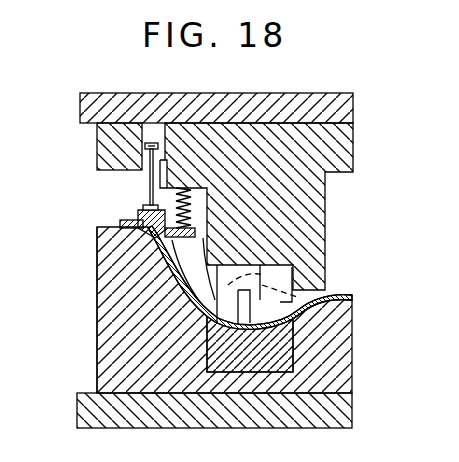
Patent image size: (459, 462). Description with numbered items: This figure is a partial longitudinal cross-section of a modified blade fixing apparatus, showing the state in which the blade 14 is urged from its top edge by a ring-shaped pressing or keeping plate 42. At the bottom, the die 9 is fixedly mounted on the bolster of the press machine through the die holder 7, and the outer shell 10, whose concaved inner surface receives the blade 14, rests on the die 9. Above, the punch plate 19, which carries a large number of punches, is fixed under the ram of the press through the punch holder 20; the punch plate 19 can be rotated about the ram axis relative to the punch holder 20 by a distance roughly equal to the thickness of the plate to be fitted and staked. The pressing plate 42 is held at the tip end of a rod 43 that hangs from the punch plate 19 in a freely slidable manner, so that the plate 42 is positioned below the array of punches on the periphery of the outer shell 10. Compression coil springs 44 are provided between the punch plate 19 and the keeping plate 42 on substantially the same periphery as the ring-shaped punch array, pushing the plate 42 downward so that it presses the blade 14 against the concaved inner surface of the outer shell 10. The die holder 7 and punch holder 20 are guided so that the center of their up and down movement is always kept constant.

The die holder 7 is at (339, 400).
The die 9 is at (340, 328).
The outer shell 10 is at (335, 300).
The blade 14 is at (156, 303).
The punch plate 19 is at (338, 152).
The punch holder 20 is at (83, 106).
The pressing plate 42 is at (140, 215).
The rod 43 is at (147, 170).
The compression coil spring 44 is at (173, 193).